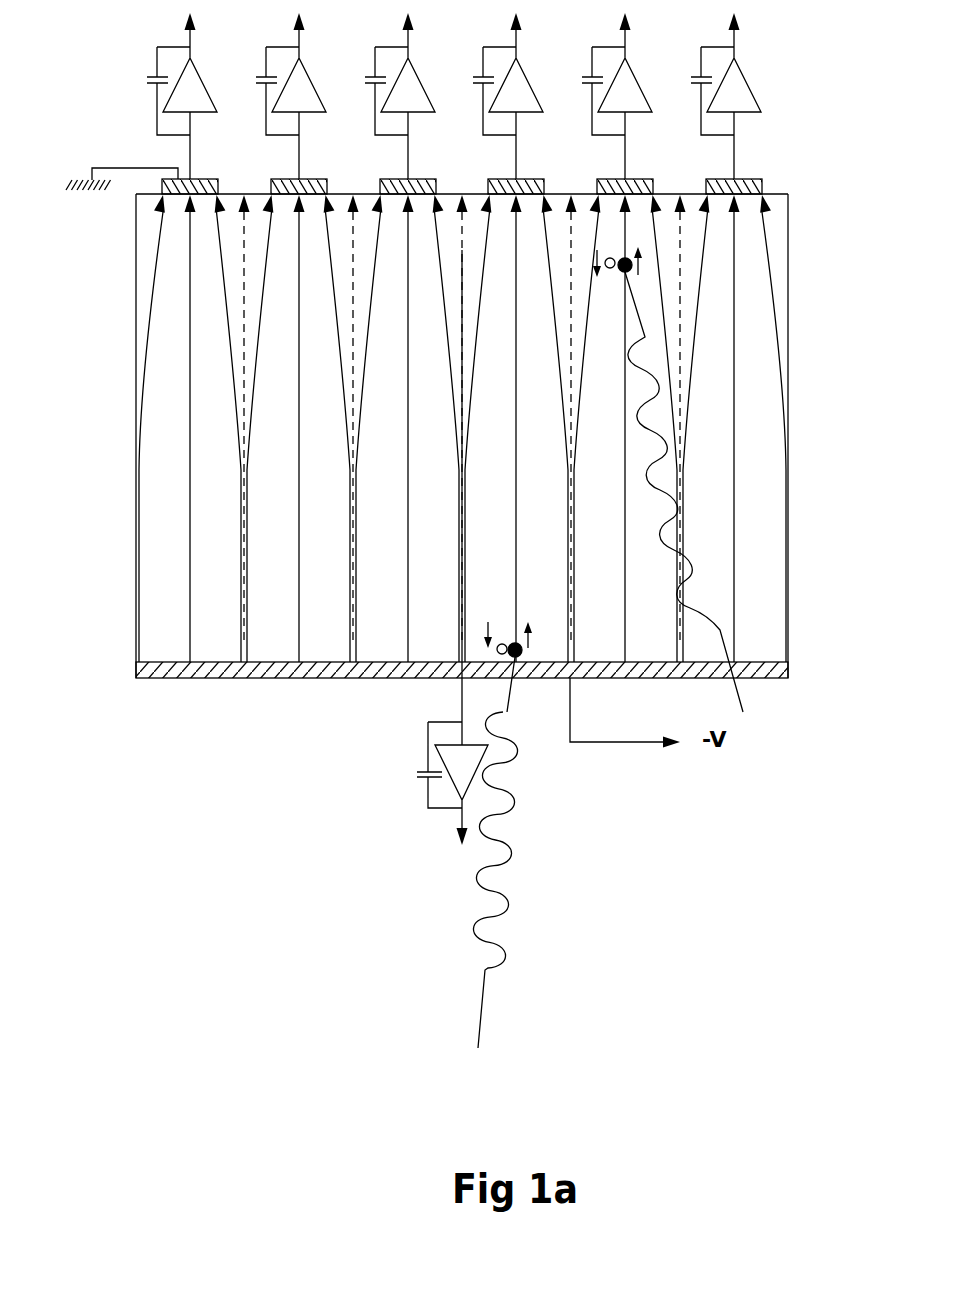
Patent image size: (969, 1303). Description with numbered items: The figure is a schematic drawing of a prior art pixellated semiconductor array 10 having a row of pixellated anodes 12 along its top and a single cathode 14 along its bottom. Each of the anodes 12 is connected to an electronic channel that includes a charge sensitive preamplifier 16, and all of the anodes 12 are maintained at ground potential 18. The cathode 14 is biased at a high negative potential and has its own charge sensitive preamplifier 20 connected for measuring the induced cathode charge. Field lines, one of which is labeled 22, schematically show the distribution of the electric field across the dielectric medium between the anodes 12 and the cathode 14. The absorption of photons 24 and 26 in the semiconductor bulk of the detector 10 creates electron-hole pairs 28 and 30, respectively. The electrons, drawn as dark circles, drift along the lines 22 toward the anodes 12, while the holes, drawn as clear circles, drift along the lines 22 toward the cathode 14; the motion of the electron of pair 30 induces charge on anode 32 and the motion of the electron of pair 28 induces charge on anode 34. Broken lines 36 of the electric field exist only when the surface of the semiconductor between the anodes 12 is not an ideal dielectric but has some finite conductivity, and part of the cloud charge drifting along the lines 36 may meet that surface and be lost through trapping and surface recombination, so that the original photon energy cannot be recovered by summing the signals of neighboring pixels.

The pixellated semiconductor array 10 is at (762, 500).
The anodes 12 is at (747, 178).
The cathode 14 is at (777, 680).
The charge sensitive preamplifier 16 is at (733, 90).
The ground potential 18 is at (125, 168).
The charge sensitive preamplifier 20 is at (446, 757).
The field lines 22 is at (783, 333).
The photon 24 is at (745, 700).
The photon 26 is at (480, 1030).
The electron-hole pair 28 is at (623, 278).
The electron-hole pair 30 is at (495, 625).
The anode 32 is at (522, 177).
The anode 34 is at (638, 178).
The broken lines 36 is at (463, 250).